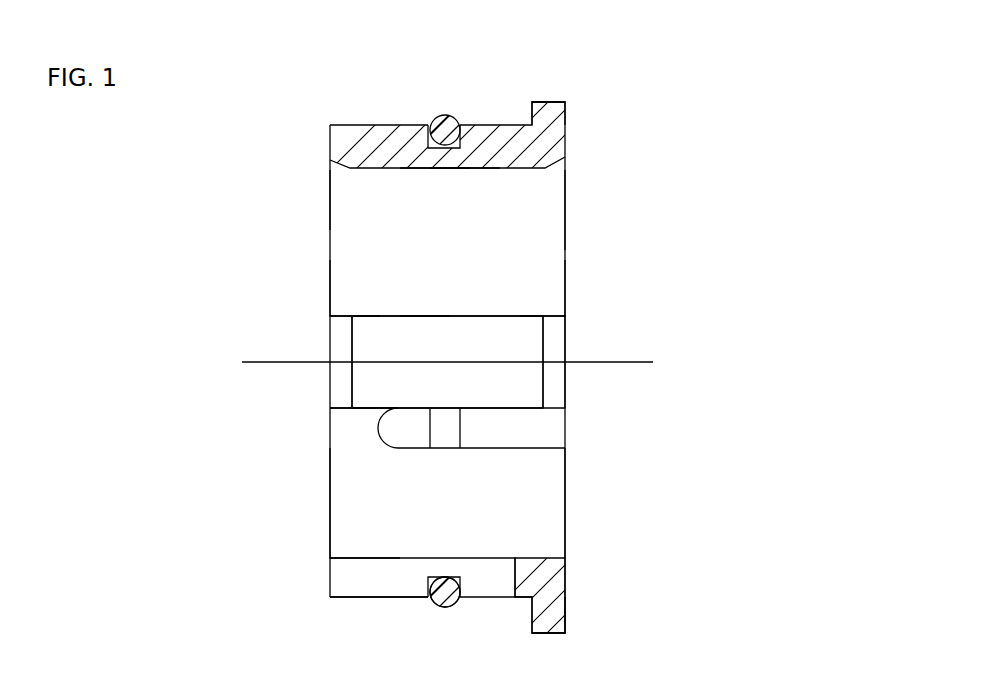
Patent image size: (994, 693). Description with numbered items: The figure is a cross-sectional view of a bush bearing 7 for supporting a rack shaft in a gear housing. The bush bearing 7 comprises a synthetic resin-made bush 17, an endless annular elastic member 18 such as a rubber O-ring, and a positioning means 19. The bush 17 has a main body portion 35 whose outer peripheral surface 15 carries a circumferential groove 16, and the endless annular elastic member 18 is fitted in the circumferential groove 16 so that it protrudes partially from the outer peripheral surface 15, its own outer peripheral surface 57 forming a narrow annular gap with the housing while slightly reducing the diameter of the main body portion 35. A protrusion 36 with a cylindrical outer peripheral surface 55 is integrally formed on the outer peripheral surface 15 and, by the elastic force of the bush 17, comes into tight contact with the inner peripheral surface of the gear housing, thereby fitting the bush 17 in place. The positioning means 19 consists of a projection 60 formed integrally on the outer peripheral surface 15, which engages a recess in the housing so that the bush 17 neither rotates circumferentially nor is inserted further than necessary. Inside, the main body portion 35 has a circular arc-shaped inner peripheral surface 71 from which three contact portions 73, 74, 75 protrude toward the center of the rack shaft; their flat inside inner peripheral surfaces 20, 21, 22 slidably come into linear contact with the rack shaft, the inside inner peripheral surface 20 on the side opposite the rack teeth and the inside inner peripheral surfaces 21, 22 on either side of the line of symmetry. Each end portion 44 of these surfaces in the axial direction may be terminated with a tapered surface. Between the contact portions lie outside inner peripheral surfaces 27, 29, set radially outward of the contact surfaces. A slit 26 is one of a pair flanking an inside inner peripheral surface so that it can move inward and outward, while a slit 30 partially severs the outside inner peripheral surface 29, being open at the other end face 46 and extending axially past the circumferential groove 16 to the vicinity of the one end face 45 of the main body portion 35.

The bush bearing 7 is at (287, 246).
The outer peripheral surface 15 is at (395, 125).
The circumferential groove 16 is at (432, 597).
The bush 17 is at (580, 534).
The endless annular elastic member 18 is at (445, 116).
The positioning means 19 is at (582, 636).
The inside inner peripheral surface 20 is at (473, 338).
The inside inner peripheral surface 21 is at (456, 170).
The inside inner peripheral surface 22 is at (373, 397).
The slit 26 is at (535, 428).
The outside inner peripheral surface 27 is at (376, 280).
The outside inner peripheral surface 29 is at (370, 509).
The slit 30 is at (363, 580).
The main body portion 35 is at (543, 288).
The protrusion 36 is at (552, 110).
The end portion 44 is at (330, 162).
The one end face 45 is at (565, 229).
The other end face 46 is at (330, 203).
The outer peripheral surface 55 is at (534, 102).
The outer peripheral surface 57 is at (445, 607).
The projection 60 is at (548, 617).
The inner peripheral surface 71 is at (375, 478).
The contact portion 73 is at (428, 338).
The contact portion 74 is at (432, 170).
The contact portion 75 is at (502, 395).